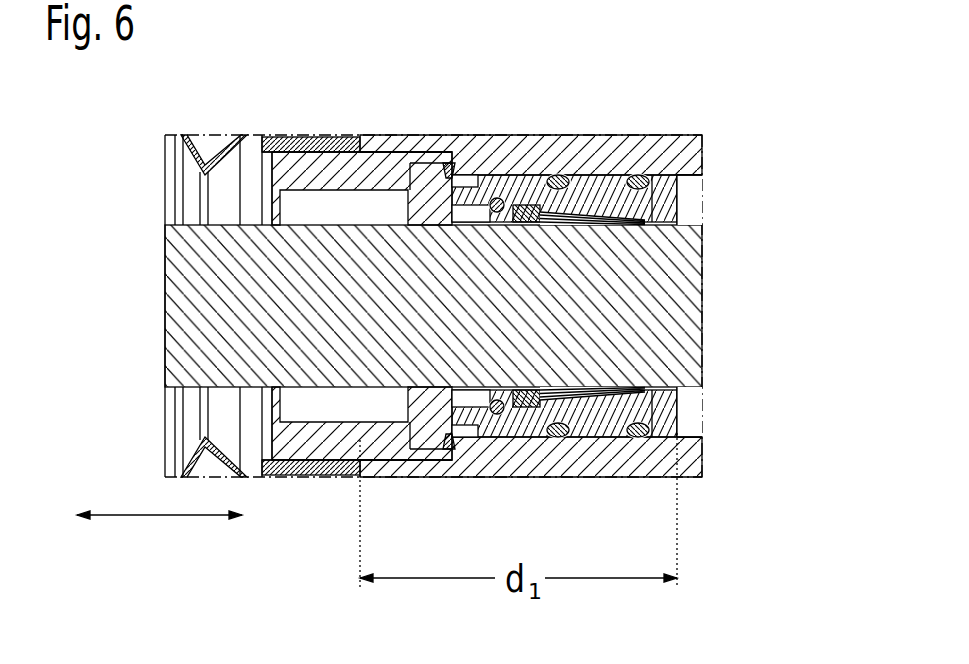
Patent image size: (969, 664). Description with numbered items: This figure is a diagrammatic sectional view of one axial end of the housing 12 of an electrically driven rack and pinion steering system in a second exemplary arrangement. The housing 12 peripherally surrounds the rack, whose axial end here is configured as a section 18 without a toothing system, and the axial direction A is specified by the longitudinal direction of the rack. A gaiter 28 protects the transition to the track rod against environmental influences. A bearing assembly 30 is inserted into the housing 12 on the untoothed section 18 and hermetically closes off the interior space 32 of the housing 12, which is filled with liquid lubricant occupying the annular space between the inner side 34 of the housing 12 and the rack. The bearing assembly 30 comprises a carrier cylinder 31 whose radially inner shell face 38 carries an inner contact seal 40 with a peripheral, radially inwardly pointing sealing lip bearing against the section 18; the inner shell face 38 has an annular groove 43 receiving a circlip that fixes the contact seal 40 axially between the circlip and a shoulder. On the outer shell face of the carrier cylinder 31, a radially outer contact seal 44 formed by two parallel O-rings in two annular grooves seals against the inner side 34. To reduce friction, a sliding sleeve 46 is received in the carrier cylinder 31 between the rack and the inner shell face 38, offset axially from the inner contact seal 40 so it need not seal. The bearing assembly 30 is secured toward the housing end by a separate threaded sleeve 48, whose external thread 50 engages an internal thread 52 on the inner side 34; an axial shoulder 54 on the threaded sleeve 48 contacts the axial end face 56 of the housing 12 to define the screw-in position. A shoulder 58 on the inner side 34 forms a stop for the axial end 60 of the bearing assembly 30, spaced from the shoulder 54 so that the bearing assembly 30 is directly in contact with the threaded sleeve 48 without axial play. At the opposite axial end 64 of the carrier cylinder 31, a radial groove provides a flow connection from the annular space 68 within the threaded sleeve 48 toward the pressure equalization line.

The housing 12 is at (678, 182).
The section without a toothing system 18 is at (673, 302).
The gaiter 28 is at (213, 150).
The bearing assembly 30 is at (688, 140).
The carrier cylinder 31 is at (652, 398).
The interior space 32 is at (687, 200).
The inner side of the housing 34 is at (690, 424).
The radially inner shell face 38 is at (667, 387).
The inner contact seal 40 is at (521, 400).
The annular groove 43 is at (500, 190).
The radially outer contact seal 44 is at (638, 176).
The sliding sleeve 46 is at (588, 398).
The threaded sleeve 48 is at (328, 447).
The external thread 50 is at (414, 361).
The internal thread 52 is at (415, 455).
The axial shoulder 54 is at (346, 76).
The axial end face 56 is at (345, 140).
The shoulder 58 is at (693, 433).
The axial end of the bearing assembly 60 is at (765, 335).
The axial end of the carrier cylinder 64 is at (450, 172).
The annular space 68 is at (309, 210).
The axial direction A is at (158, 516).